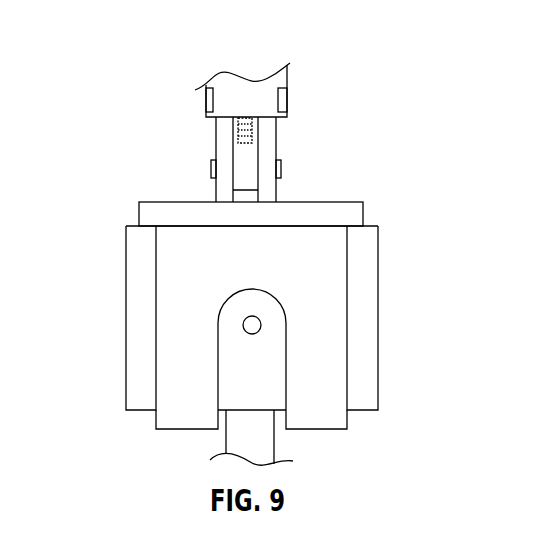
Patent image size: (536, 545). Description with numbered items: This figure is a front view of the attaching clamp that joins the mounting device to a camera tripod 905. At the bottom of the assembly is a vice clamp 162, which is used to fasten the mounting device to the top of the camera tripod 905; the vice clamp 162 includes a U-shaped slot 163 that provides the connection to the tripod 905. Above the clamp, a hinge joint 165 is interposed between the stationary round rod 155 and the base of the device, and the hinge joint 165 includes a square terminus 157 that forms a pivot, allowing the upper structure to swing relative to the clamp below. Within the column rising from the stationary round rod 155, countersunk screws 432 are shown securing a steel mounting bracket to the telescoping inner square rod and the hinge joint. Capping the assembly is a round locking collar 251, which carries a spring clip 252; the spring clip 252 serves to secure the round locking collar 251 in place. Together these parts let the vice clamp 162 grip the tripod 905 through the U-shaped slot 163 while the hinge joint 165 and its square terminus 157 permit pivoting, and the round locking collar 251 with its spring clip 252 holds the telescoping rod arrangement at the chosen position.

The round locking collar 251 is at (243, 85).
The spring clip 252 is at (206, 103).
The countersunk screws 432 is at (237, 138).
The square terminus 157 is at (248, 162).
The hinge joint 165 is at (211, 168).
The stationary round rod 155 is at (215, 188).
The camera tripod 905 is at (357, 312).
The U-shaped slot 163 is at (243, 325).
The vice clamp 162 is at (332, 417).